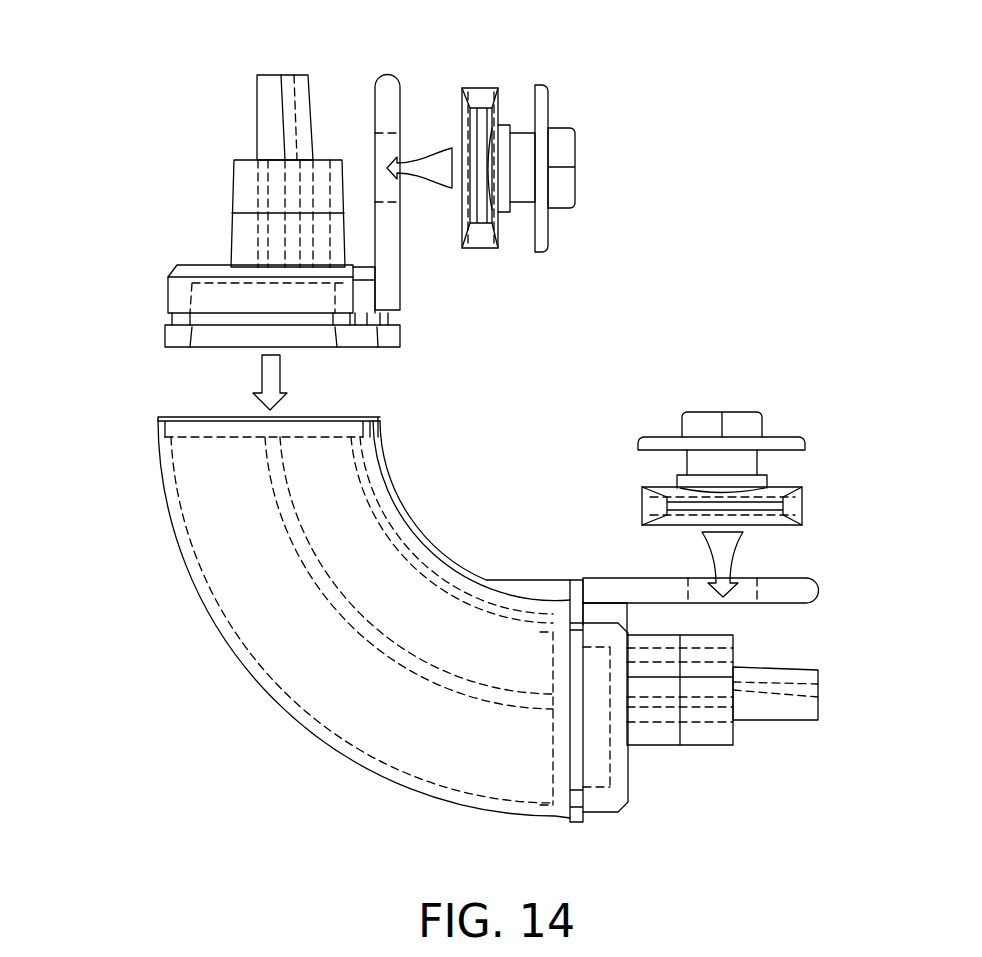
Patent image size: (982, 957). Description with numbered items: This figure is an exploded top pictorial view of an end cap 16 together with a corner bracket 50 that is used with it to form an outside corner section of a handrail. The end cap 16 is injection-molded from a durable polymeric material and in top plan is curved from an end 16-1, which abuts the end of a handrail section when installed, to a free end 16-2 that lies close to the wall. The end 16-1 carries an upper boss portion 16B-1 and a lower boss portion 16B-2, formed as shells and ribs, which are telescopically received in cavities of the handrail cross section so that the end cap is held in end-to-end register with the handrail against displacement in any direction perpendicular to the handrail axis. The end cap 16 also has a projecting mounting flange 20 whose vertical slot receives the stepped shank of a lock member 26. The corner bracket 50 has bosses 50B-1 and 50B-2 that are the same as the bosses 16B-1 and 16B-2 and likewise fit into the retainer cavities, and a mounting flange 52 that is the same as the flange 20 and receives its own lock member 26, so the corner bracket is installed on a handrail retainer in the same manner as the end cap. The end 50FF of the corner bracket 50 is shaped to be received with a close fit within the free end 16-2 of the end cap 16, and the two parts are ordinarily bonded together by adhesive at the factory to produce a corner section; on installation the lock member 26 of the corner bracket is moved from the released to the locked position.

The end cap 16 is at (527, 594).
The end of the end cap 16-1 is at (649, 708).
The free end of the end cap 16-2 is at (334, 395).
The upper boss portion 16B-1 is at (718, 718).
The lower boss portion 16B-2 is at (811, 717).
The mounting flange 20 is at (740, 579).
The lock member 26 is at (633, 305).
The corner bracket 50 is at (279, 177).
The boss of the corner bracket 50B-1 is at (216, 213).
The boss of the corner bracket 50B-2 is at (343, 83).
The clamp foot flange 50FF is at (214, 324).
The mounting flange of the corner bracket 52 is at (452, 194).